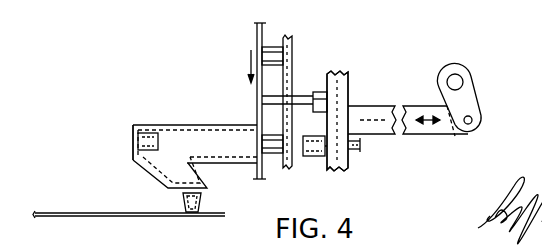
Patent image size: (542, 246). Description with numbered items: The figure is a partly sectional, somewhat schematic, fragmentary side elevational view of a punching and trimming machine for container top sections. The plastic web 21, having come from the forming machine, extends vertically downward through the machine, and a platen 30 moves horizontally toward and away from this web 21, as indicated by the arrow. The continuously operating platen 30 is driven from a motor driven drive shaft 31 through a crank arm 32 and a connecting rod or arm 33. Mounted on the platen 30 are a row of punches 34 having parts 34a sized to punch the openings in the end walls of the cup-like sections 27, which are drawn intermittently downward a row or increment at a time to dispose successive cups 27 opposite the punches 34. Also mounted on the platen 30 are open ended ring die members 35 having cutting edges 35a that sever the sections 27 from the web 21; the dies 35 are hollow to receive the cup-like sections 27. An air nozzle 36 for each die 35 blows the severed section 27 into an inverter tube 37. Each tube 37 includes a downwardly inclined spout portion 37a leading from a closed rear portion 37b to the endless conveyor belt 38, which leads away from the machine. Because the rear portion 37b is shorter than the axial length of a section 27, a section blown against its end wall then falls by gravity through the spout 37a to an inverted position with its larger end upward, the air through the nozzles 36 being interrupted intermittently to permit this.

The plastic web 21 is at (256, 25).
The cup-like sections 27 is at (275, 47).
The platen 30 is at (349, 93).
The drive shaft 31 is at (456, 72).
The crank arm 32 is at (475, 98).
The connecting rod 33 is at (445, 134).
The punches 34 is at (338, 72).
The punch parts 34a is at (315, 90).
The die members 35 is at (330, 168).
The cutting edges 35a is at (307, 156).
The air nozzle 36 is at (353, 152).
The inverter tube 37 is at (192, 125).
The spout portion 37a is at (162, 172).
The closed rear portion 37b is at (133, 142).
The endless conveyor belt 38 is at (54, 212).